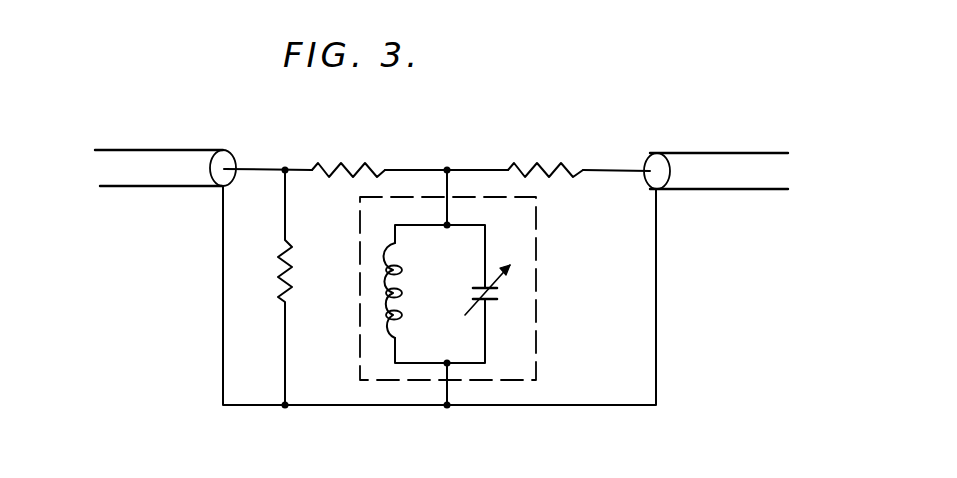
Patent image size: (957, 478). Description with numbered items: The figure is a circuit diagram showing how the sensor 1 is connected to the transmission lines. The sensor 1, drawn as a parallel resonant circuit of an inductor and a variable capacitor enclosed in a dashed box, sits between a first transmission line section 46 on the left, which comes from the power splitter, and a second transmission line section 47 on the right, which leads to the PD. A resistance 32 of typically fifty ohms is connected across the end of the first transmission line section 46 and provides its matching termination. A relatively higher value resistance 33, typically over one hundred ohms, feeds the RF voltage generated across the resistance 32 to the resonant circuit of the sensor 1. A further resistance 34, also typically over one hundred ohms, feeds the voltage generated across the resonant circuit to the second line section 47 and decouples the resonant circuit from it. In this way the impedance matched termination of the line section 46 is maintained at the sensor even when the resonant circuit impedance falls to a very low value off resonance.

The sensor 1 is at (536, 228).
The resistance 32 is at (291, 272).
The resistance 33 is at (340, 161).
The resistance 34 is at (551, 165).
The first transmission line section 46 is at (149, 157).
The second transmission line section 47 is at (723, 152).